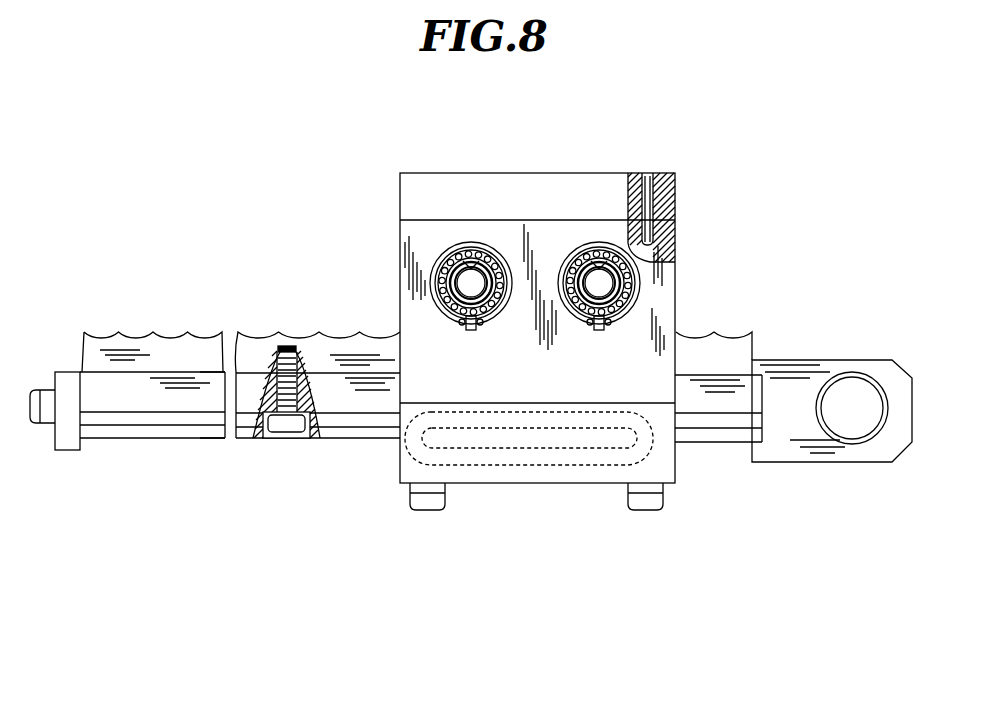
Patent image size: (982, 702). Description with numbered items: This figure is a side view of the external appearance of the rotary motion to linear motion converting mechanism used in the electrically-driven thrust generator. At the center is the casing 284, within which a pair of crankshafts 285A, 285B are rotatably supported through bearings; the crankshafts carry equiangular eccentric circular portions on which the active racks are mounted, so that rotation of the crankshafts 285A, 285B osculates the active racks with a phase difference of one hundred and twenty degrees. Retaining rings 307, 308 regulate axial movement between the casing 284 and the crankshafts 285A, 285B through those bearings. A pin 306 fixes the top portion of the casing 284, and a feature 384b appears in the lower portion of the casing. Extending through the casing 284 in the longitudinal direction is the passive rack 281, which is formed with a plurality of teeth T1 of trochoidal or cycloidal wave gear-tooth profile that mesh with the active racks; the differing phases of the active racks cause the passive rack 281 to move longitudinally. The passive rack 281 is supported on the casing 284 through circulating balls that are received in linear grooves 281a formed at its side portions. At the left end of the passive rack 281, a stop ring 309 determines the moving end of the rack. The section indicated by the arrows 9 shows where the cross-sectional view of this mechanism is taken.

The section line 9- 9 is at (473, 157).
The casing 284 is at (660, 293).
The crankshaft 285A is at (440, 257).
The crankshaft 285B is at (643, 267).
The retaining ring 307 is at (603, 280).
The retaining ring 308 is at (442, 323).
The pin 306 is at (660, 178).
The slot 384b is at (528, 457).
The passive rack 281 is at (110, 440).
The linear groove 281a is at (207, 420).
The stop ring 309 is at (62, 372).
The teeth T1 is at (288, 342).